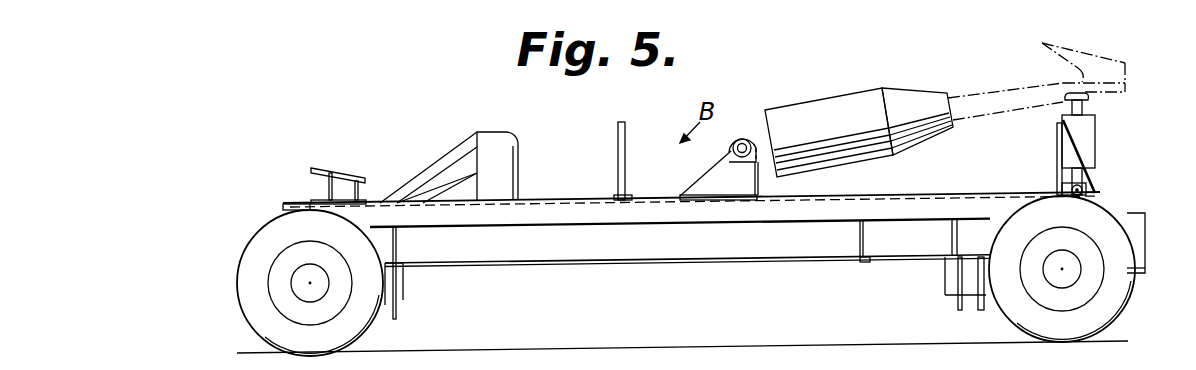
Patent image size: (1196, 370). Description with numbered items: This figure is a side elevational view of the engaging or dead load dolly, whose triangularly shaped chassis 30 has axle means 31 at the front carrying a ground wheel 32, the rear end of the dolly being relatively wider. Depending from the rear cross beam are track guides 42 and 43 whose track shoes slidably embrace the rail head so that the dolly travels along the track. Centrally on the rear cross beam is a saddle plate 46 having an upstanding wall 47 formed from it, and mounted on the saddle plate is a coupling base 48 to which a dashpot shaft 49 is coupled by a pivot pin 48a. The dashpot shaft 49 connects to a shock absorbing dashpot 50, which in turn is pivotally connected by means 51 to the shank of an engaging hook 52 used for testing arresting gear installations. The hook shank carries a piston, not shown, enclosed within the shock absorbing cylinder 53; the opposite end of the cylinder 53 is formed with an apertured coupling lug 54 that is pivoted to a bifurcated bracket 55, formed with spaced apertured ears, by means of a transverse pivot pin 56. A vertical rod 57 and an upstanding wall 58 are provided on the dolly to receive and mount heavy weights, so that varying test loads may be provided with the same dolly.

The chassis 30 is at (757, 255).
The axle means 31 is at (303, 285).
The ground wheel 32 is at (348, 332).
The track guide 42 is at (406, 289).
The track guide 43 is at (948, 286).
The saddle plate 46 is at (1059, 186).
The upstanding wall 47 is at (1057, 152).
The coupling base 48 is at (1085, 187).
The pivot pin 48a is at (1078, 196).
The dashpot shaft 49 is at (1097, 164).
The shock absorbing dashpot 50 is at (1090, 131).
The pivotal connecting means 51 is at (1065, 96).
The engaging hook 52 is at (1107, 62).
The shock absorbing cylinder 53 is at (858, 100).
The apertured coupling lug 54 is at (765, 168).
The bifurcated bracket 55 is at (716, 177).
The transverse pivot pin 56 is at (740, 139).
The vertical rod 57 is at (630, 124).
The upstanding wall 58 is at (505, 170).